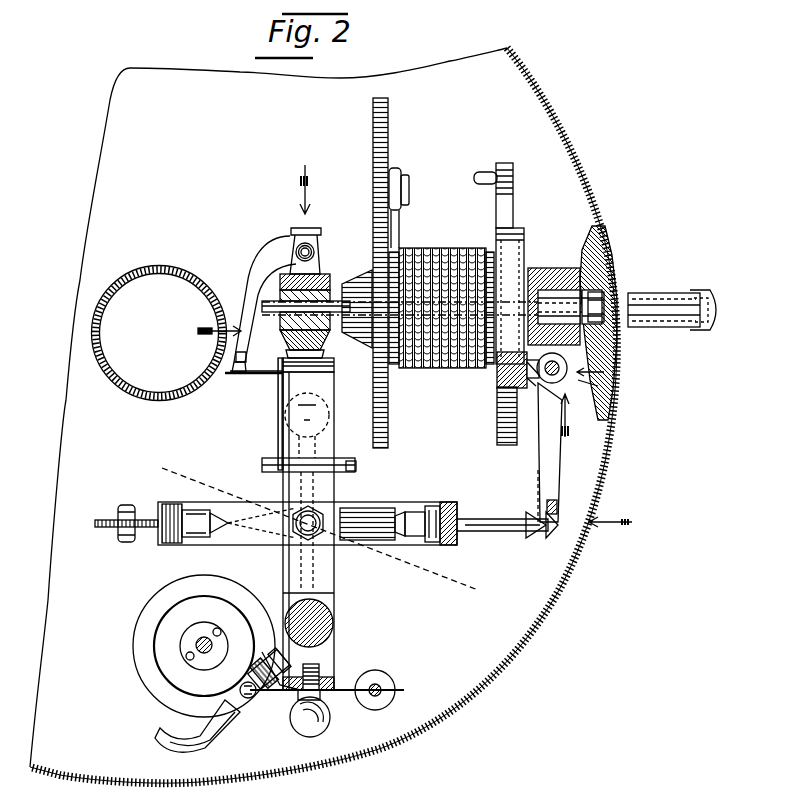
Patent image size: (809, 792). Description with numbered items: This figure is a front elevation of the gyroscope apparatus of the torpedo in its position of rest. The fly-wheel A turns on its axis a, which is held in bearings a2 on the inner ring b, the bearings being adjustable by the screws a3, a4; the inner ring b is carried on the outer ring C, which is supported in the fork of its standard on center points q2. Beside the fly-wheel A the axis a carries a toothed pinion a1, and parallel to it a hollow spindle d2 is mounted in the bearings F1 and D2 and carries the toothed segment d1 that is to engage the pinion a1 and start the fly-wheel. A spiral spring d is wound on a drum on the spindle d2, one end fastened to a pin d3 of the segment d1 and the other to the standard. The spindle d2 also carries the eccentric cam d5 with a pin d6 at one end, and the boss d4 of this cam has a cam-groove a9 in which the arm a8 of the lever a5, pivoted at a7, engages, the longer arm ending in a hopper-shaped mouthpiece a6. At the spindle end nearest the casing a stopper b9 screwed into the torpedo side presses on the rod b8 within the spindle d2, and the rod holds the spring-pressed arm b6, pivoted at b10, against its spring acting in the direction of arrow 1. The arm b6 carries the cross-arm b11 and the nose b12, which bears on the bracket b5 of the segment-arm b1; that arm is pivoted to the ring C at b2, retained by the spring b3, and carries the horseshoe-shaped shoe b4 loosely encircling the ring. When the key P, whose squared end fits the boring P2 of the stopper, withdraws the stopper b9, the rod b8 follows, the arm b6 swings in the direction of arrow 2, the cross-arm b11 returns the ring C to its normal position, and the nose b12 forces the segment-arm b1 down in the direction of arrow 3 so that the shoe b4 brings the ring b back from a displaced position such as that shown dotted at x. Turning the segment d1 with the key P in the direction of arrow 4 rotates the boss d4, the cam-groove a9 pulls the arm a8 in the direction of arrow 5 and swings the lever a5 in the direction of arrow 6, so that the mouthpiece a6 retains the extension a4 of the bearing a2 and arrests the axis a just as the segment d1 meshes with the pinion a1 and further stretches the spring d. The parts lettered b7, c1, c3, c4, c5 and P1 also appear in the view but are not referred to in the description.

The arrow 1 is at (297, 190).
The arrow 2 is at (219, 322).
The arrow 3 is at (590, 365).
The arrow 4 is at (591, 377).
The arrow 5 is at (570, 413).
The arrow 6 is at (610, 515).
The fly-wheel A is at (336, 622).
The ring C is at (208, 626).
The bearing D2 is at (275, 256).
The bearing F1 is at (548, 268).
The key P is at (690, 302).
The shaft end P1 is at (706, 331).
The boring of the stopper P2 is at (602, 322).
The axis a is at (256, 528).
The toothed pinion a1 is at (386, 540).
The bearings a2 is at (416, 538).
The adjusting screw a3 is at (158, 532).
The extension of the bearing a4 is at (506, 531).
The lever a5 is at (556, 448).
The hopper-shaped mouthpiece a6 is at (552, 538).
The pivot a7 is at (568, 374).
The arm of the lever a8 is at (533, 386).
The cam-groove a9 is at (500, 382).
The inner ring b is at (204, 507).
The segment-arm b1 is at (283, 404).
The pivot b2 is at (264, 466).
The spring b3 is at (560, 282).
The horseshoe-shaped plate b4 is at (352, 468).
The bracket b5 is at (283, 380).
The spring-pressed arm b6 is at (270, 304).
The pivot bracket b7 is at (312, 237).
The rod b8 is at (286, 322).
The stopper b9 is at (612, 290).
The pivot b10 is at (314, 252).
The cross-arm b11 is at (236, 357).
The nose b12 is at (236, 376).
The pin c1 is at (258, 692).
The clamp bracket c3 is at (258, 700).
The hook lever c4 is at (205, 736).
The hub pin c5 is at (196, 646).
The spiral spring d is at (440, 250).
The toothed segment d1 is at (389, 406).
The spindle d2 is at (356, 276).
The pin d3 is at (410, 190).
The boss d4 is at (525, 234).
The cam d5 is at (513, 196).
The pin d6 is at (484, 171).
The center points q2 is at (296, 352).
The dotted position x is at (318, 526).